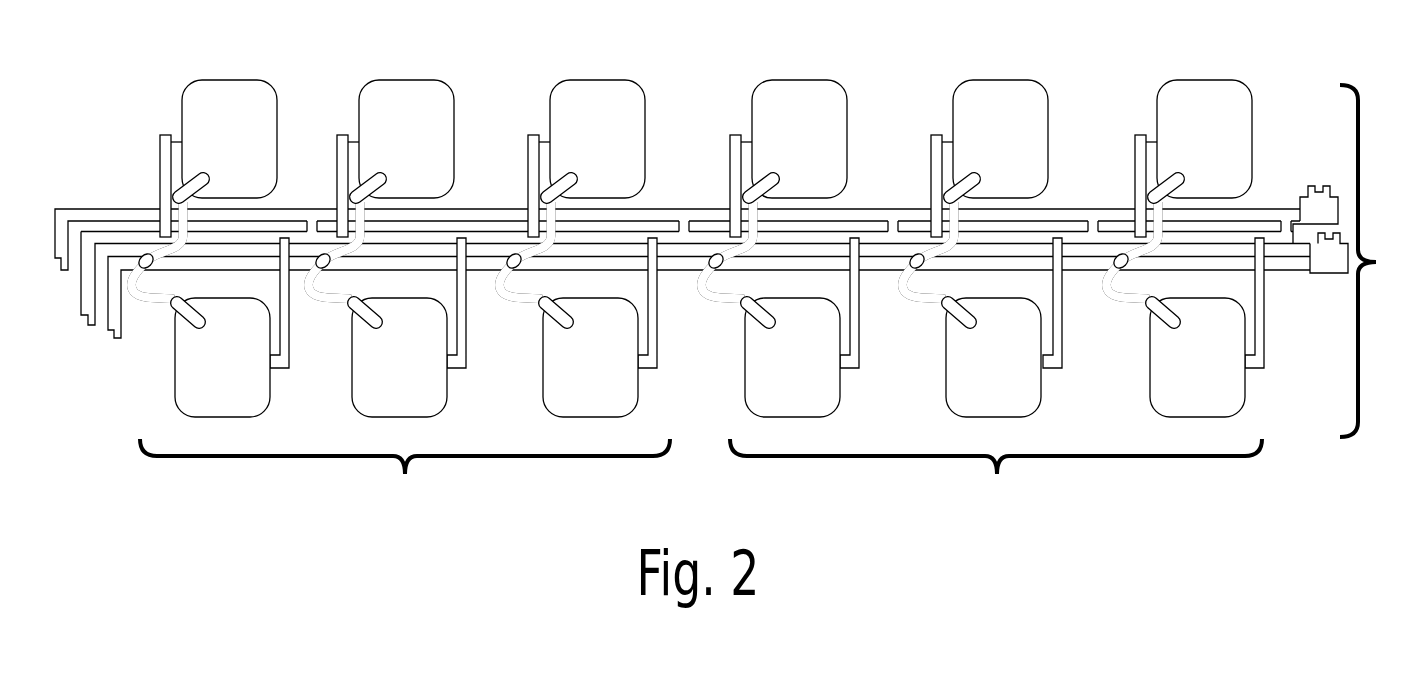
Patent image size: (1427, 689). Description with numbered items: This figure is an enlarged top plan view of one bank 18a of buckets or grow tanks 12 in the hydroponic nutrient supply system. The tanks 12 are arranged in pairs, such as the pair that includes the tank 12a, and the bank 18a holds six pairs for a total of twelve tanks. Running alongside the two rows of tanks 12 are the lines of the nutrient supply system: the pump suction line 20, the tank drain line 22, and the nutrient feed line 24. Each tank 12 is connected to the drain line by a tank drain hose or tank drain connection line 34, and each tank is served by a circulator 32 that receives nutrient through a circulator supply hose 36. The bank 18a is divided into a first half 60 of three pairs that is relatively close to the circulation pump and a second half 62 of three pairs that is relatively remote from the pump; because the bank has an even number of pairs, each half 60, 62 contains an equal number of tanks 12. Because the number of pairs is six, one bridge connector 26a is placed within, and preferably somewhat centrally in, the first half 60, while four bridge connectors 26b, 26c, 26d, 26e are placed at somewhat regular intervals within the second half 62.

The bucket or grow tank 12 is at (710, 248).
The bucket 12a is at (1191, 149).
The bank 18a is at (1357, 261).
The pump suction line 20 is at (68, 215).
The tank drain line 22 is at (105, 238).
The nutrient feed line 24 is at (116, 321).
The bridge connector 26a is at (312, 222).
The bridge connector 26b is at (682, 222).
The bridge connector 26c is at (894, 222).
The bridge connector 26d is at (1090, 222).
The bridge connector 26e is at (1285, 224).
The circulator 32 is at (197, 182).
The tank drain hose or tank drain connection line 34 is at (162, 148).
The circulator supply hose 36 is at (181, 240).
The first half 60 is at (405, 474).
The second half 62 is at (996, 474).